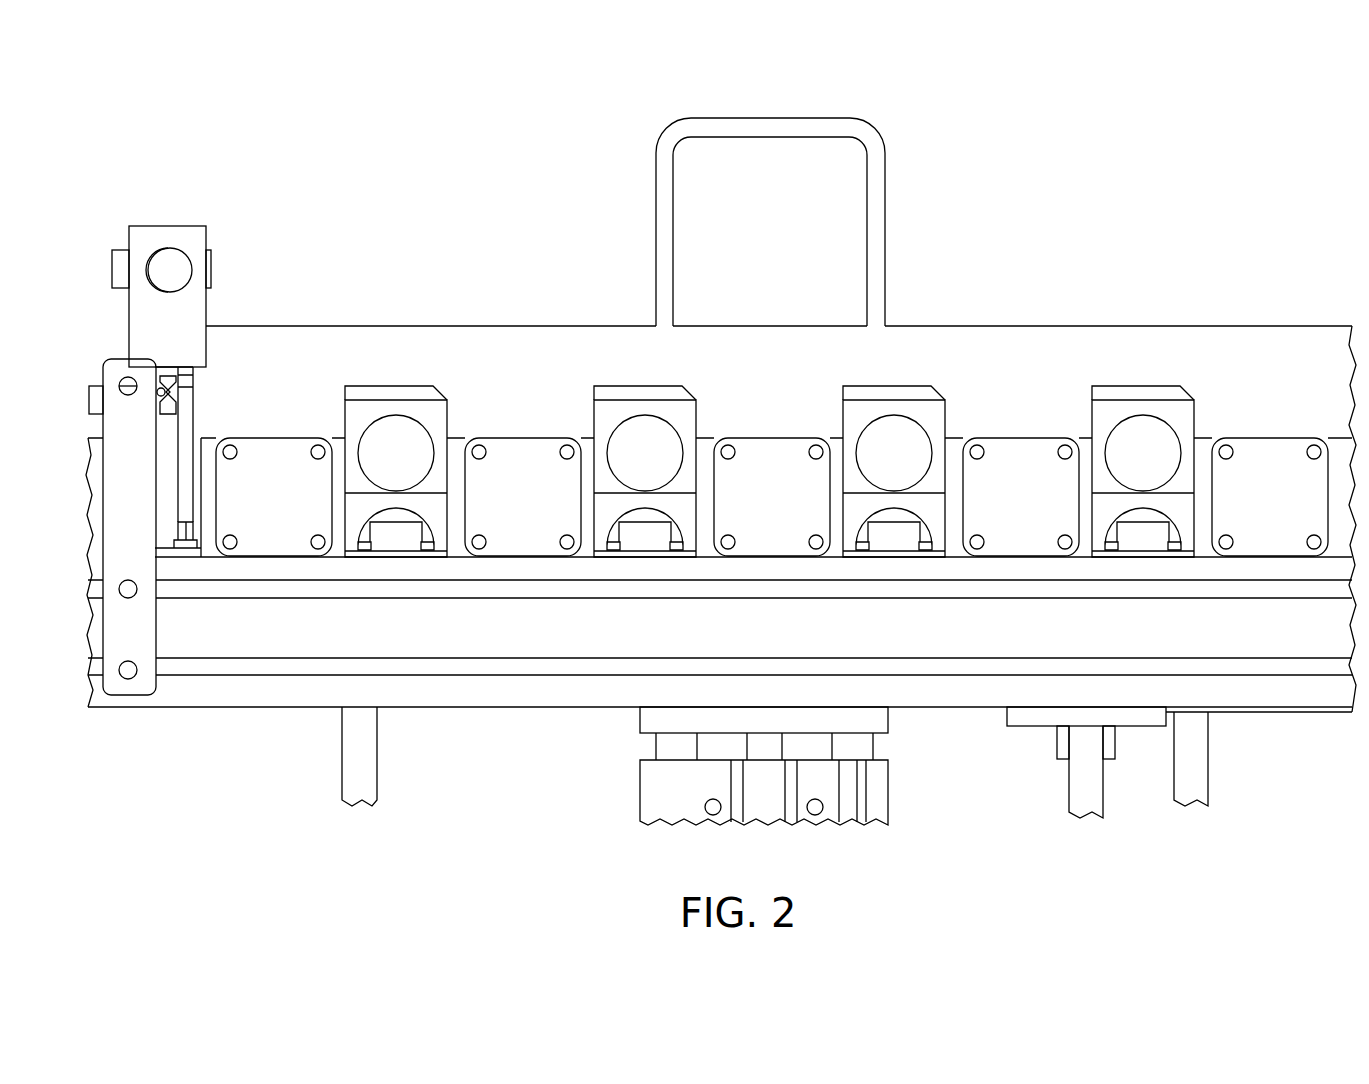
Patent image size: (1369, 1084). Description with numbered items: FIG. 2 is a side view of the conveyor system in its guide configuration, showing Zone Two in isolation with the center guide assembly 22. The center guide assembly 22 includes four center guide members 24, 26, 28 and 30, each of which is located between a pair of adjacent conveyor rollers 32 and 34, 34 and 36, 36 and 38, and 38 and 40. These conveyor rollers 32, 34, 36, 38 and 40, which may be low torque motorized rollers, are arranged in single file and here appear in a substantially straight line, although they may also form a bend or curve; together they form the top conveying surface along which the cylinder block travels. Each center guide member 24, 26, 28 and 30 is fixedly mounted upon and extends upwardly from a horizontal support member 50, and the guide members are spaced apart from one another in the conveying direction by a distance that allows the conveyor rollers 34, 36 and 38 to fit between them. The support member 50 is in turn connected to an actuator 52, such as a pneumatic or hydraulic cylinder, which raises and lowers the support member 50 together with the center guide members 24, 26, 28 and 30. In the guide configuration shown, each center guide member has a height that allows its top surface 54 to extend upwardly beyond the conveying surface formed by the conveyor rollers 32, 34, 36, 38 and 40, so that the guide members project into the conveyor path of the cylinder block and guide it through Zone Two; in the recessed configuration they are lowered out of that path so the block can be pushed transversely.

The center guide assembly 22 is at (1073, 338).
The center guide member 24 is at (357, 392).
The center guide member 26 is at (606, 392).
The center guide member 28 is at (887, 392).
The center guide member 30 is at (1138, 392).
The conveyor roller 32 is at (275, 436).
The conveyor roller 34 is at (520, 436).
The conveyor roller 36 is at (767, 436).
The conveyor roller 38 is at (1014, 436).
The conveyor roller 40 is at (1263, 436).
The horizontal support member 50 is at (890, 720).
The actuator 52 is at (640, 777).
The top surface 54 is at (402, 392).